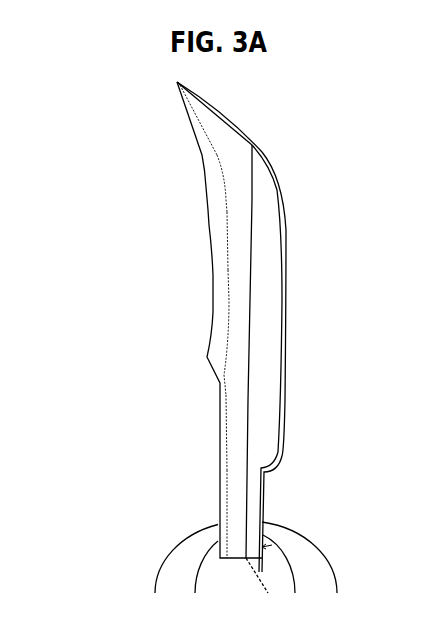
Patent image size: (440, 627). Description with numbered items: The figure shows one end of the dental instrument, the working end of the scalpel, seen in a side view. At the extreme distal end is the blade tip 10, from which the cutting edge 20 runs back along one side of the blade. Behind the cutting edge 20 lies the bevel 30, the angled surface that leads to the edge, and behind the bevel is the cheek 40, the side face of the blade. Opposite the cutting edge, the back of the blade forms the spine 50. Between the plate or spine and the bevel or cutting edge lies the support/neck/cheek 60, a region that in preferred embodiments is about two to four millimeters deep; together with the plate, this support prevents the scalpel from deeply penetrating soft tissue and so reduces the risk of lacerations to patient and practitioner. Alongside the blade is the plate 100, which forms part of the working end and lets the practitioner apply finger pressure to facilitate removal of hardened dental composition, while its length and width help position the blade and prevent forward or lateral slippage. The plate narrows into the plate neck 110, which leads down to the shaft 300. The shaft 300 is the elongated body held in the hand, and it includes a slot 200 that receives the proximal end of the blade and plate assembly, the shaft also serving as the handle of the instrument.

The blade tip 10 is at (177, 82).
The cutting edge 20 is at (203, 166).
The bevel 30 is at (220, 226).
The cheek 40 is at (240, 288).
The spine 50 is at (248, 402).
The support/neck/cheek 60 is at (230, 498).
The plate 100 is at (270, 288).
The plate neck 110 is at (257, 516).
The slot 200 is at (247, 557).
The shaft 300 is at (322, 583).